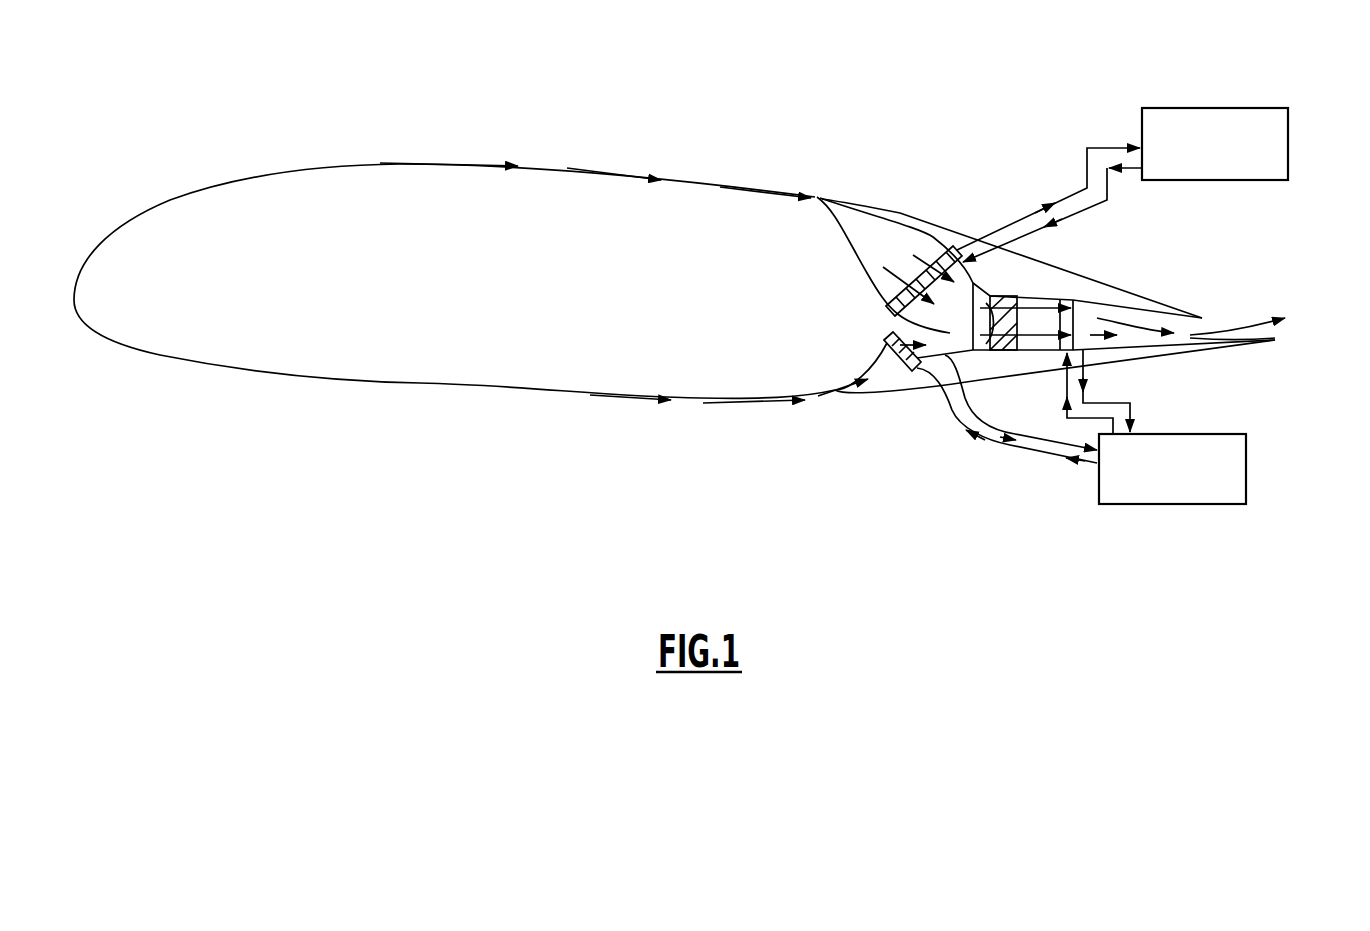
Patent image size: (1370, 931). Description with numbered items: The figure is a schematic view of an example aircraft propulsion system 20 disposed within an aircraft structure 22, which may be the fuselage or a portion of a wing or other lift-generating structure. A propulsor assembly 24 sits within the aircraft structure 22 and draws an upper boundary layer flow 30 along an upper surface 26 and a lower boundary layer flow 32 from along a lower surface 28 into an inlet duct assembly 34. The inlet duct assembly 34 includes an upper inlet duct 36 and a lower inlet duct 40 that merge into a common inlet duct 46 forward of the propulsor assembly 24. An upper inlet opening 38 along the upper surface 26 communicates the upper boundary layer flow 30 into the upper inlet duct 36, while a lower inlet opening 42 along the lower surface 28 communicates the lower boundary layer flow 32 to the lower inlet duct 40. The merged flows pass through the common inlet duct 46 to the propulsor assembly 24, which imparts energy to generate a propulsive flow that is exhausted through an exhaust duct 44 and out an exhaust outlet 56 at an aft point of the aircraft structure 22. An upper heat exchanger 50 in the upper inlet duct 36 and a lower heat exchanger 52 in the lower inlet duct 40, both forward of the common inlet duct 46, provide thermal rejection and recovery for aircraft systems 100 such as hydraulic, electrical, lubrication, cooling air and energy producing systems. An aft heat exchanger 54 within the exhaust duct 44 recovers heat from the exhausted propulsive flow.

The aircraft propulsion system 20 is at (825, 72).
The aircraft structure 22 is at (75, 506).
The propulsor assembly 24 is at (1031, 287).
The upper surface 26 is at (541, 173).
The lower surface 28 is at (536, 387).
The upper boundary layer flow 30 is at (613, 172).
The lower boundary layer flow 32 is at (630, 398).
The inlet duct assembly 34 is at (932, 380).
The upper inlet duct 36 is at (870, 238).
The upper inlet opening 38 is at (811, 193).
The lower inlet duct 40 is at (895, 378).
The lower inlet opening 42 is at (829, 401).
The exhaust duct 44 is at (1125, 334).
The common inlet duct 46 is at (957, 318).
The upper heat exchanger 50 is at (943, 247).
The lower heat exchanger 52 is at (908, 370).
The aft heat exchanger 54 is at (1073, 317).
The exhaust outlet 56 is at (1204, 321).
The aircraft systems 100 is at (1288, 150).